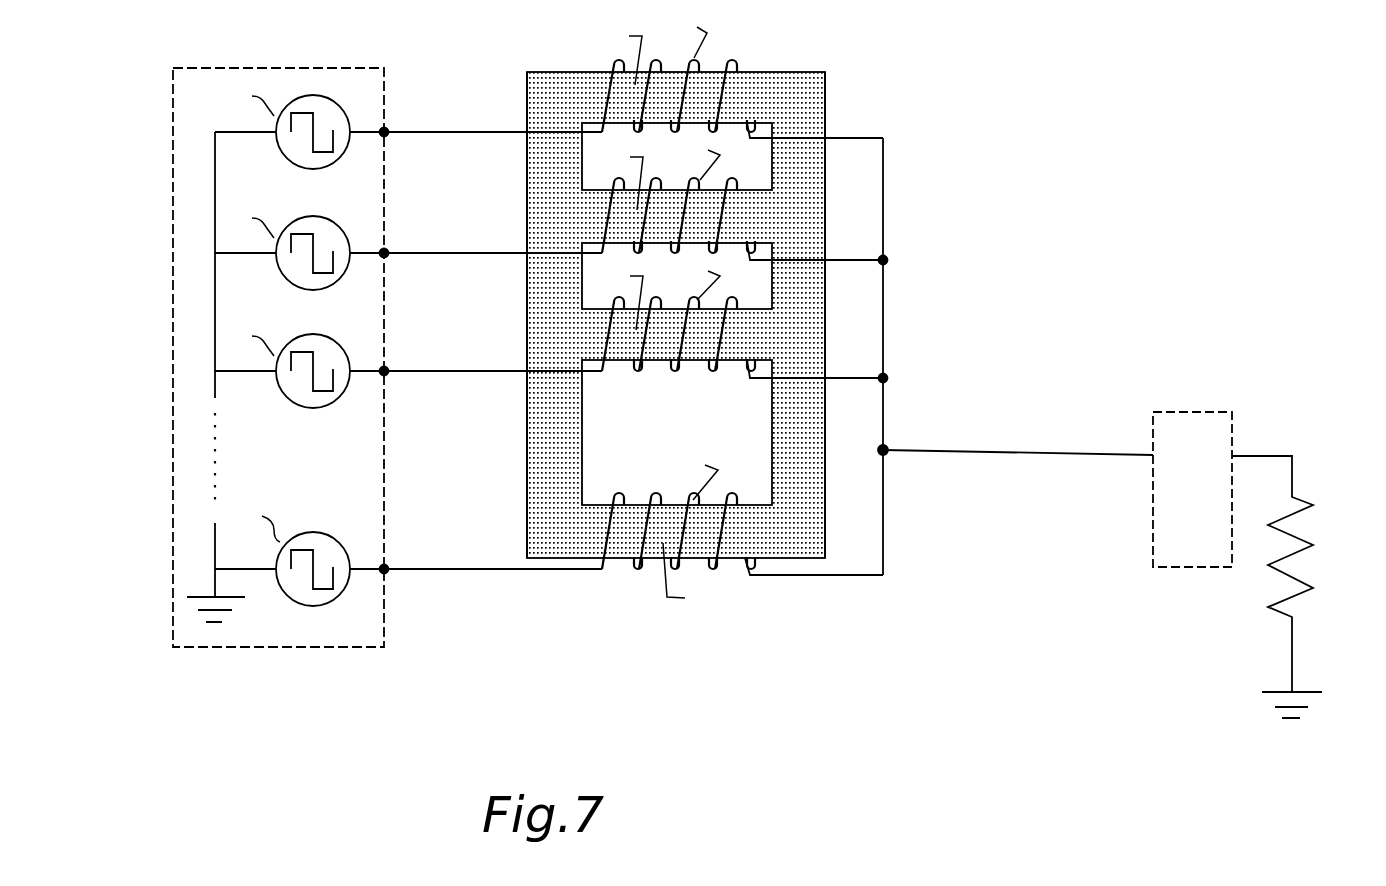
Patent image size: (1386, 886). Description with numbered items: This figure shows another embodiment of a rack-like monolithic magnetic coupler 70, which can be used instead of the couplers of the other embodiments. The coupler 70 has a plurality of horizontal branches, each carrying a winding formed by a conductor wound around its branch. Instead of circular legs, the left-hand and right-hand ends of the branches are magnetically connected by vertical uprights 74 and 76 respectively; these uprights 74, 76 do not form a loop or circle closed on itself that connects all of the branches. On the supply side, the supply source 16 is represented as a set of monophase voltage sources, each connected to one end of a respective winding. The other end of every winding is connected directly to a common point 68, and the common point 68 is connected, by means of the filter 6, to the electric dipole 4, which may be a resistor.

The supply source 16 is at (170, 139).
The rack-like monolithic magnetic coupler 70 is at (718, 314).
The vertical upright 74 is at (560, 429).
The vertical upright 76 is at (810, 317).
The common point 68 is at (885, 456).
The filter 6 is at (1192, 489).
The electric dipole 4 is at (1313, 548).